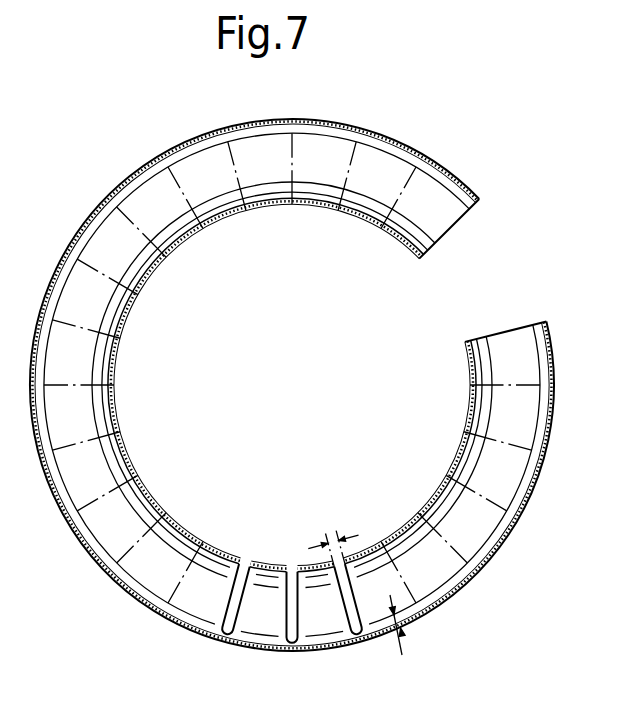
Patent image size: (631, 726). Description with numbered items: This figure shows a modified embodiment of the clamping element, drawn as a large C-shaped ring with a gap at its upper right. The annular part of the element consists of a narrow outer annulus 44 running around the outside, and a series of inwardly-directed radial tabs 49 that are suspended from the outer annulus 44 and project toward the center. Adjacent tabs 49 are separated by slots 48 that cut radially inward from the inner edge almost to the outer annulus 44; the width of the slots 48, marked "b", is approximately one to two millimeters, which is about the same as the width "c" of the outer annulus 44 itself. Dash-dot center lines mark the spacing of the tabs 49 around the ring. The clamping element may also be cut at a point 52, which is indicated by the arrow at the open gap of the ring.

The point 52 is at (522, 247).
The inwardly-directed radial tabs 49 is at (268, 583).
The narrow outer annulus 44 is at (226, 640).
The slots 48 is at (295, 645).